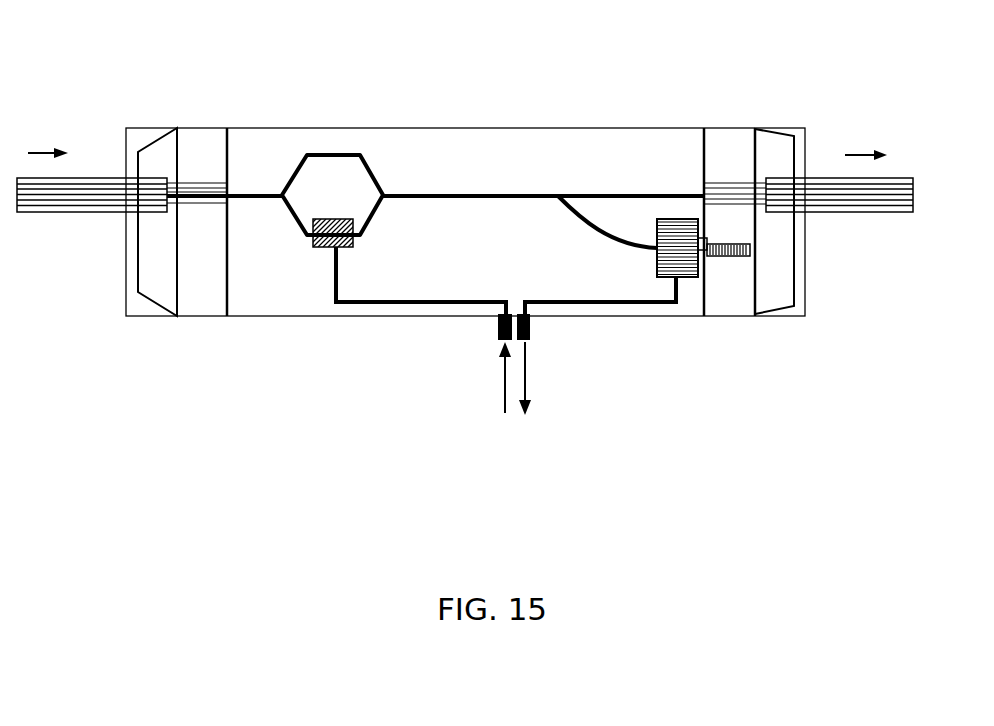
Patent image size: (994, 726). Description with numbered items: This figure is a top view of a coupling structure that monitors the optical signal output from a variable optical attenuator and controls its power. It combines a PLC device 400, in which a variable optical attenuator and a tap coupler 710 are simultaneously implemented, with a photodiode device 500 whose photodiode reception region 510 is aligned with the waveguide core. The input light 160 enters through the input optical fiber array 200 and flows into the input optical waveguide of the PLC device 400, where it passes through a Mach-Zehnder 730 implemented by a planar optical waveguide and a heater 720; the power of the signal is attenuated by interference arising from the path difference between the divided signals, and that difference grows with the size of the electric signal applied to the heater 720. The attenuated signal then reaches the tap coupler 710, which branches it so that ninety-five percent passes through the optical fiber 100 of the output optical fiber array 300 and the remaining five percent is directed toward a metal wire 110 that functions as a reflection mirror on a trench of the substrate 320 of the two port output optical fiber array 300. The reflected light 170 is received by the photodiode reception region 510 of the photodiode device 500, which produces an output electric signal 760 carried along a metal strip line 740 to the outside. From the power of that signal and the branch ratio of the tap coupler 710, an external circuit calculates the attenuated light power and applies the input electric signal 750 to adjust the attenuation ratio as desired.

The optical fiber 100 is at (875, 195).
The metal wire for reflection mirror 110 is at (747, 257).
The input light 160 is at (43, 153).
The reflected light 170 is at (672, 228).
The input optical fiber array 200 is at (193, 303).
The output optical fiber array 300 is at (717, 302).
The substrate having V-shaped trench 320 is at (795, 308).
The PLC device 400 is at (245, 305).
The photodiode device 500 is at (657, 277).
The photodiode reception region 510 is at (688, 263).
The tap coupler 710 is at (558, 197).
The heater 720 is at (320, 247).
The Mach-Zehnder 730 is at (363, 157).
The metal strip line 740 is at (405, 303).
The input electric signal 750 is at (505, 387).
The output electric signal 760 is at (528, 390).